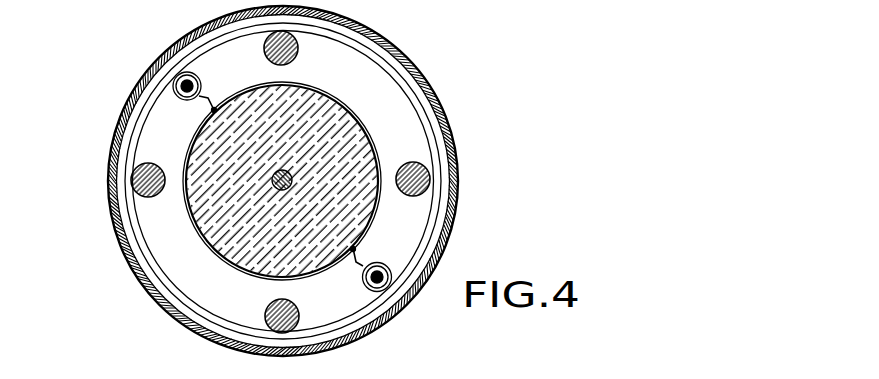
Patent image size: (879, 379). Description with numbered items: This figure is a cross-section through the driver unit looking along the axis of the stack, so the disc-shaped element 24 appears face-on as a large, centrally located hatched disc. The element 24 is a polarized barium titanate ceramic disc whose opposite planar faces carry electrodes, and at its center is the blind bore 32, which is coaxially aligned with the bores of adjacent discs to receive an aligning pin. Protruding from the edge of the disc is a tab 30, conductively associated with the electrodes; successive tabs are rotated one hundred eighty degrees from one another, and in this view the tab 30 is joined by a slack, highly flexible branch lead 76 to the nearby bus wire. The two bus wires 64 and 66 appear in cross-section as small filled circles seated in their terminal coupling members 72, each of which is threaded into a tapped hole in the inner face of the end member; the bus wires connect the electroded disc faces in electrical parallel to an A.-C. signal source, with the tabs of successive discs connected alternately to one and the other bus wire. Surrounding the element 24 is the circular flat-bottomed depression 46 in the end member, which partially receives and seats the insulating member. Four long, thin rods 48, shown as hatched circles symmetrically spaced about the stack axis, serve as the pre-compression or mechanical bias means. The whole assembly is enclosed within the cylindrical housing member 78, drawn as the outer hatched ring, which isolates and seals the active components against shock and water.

The element 24 is at (307, 141).
The tab 30 is at (215, 107).
The blind bore 32 is at (291, 177).
The depression 46 is at (390, 122).
The rod 48 is at (297, 44).
The bus wire 64 is at (182, 85).
The bus wire 66 is at (378, 283).
The terminal coupling member 72 is at (188, 72).
The branch lead 76 is at (204, 99).
The housing member 78 is at (128, 257).